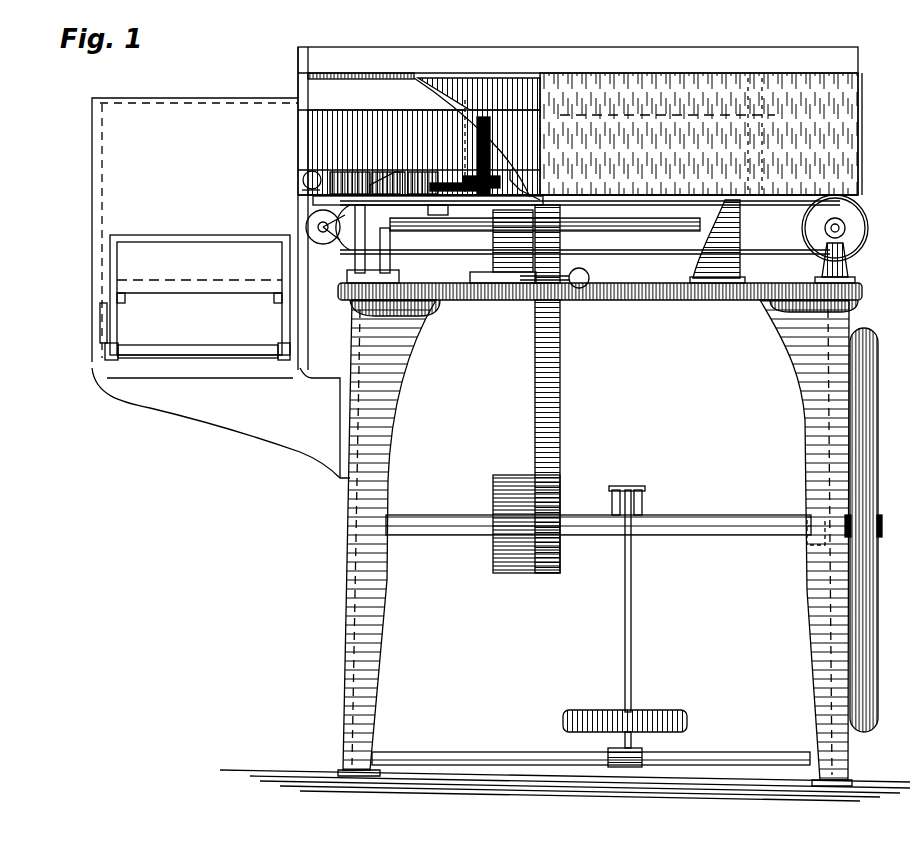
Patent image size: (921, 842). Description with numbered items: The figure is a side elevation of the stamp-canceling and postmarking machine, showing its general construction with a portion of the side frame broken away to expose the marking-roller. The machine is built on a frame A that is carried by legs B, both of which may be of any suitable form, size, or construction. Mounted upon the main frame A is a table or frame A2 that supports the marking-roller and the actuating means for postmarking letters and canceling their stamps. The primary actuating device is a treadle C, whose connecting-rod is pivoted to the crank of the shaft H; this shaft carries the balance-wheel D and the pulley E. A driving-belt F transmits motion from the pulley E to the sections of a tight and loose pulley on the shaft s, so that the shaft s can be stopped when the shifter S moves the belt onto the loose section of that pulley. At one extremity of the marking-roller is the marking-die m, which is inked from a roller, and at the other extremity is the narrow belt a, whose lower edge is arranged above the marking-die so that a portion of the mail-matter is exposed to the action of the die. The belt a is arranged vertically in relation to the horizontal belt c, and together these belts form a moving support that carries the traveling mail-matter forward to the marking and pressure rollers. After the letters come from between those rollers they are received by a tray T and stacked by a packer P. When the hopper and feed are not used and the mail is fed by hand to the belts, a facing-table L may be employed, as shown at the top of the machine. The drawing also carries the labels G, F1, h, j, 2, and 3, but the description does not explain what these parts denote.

The facing-table L is at (695, 54).
The tray T is at (195, 238).
The packer P is at (195, 297).
The bracket arm G is at (221, 423).
The legs B is at (595, 543).
The frame A is at (684, 293).
The table or frame A2 is at (447, 215).
The driving-belt F is at (560, 416).
The upper rack portion F1 is at (534, 244).
The pulley E is at (526, 524).
The shaft H is at (712, 520).
The crank arm h is at (640, 493).
The treadle C is at (680, 722).
The balance-wheel D is at (872, 607).
The shifter S is at (589, 278).
The belt a is at (419, 137).
The marking-die m is at (302, 180).
The feed slide j is at (428, 172).
The horizontal belt c is at (573, 227).
The shaft s is at (662, 231).
The belt support bracket 3 is at (742, 252).
The belt roller 2 is at (835, 239).